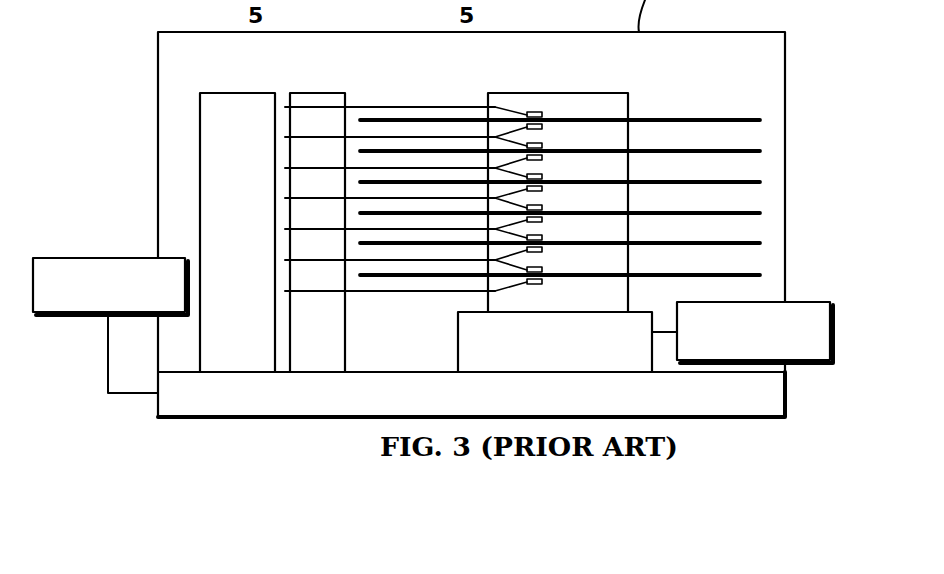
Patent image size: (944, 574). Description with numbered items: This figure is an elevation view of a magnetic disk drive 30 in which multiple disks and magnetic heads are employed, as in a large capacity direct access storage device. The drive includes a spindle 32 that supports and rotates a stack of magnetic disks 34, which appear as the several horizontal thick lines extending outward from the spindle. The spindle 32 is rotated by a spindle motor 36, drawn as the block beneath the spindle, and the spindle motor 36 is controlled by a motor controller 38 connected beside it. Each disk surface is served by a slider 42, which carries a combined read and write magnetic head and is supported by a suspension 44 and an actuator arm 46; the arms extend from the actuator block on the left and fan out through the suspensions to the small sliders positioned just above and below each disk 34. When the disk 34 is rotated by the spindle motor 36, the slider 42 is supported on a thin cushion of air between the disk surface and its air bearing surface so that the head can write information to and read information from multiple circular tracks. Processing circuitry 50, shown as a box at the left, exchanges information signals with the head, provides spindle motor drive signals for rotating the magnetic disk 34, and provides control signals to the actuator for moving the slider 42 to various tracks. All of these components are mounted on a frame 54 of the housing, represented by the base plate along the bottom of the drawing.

The magnetic disk drive 30 is at (678, 91).
The spindle 32 is at (607, 93).
The magnetic disk 34 is at (758, 122).
The spindle motor 36 is at (575, 354).
The motor controller 38 is at (820, 361).
The slider 42 is at (543, 139).
The suspension 44 is at (519, 137).
The actuator arm 46 is at (445, 137).
The processing circuitry 50 is at (92, 258).
The frame 54 is at (275, 418).